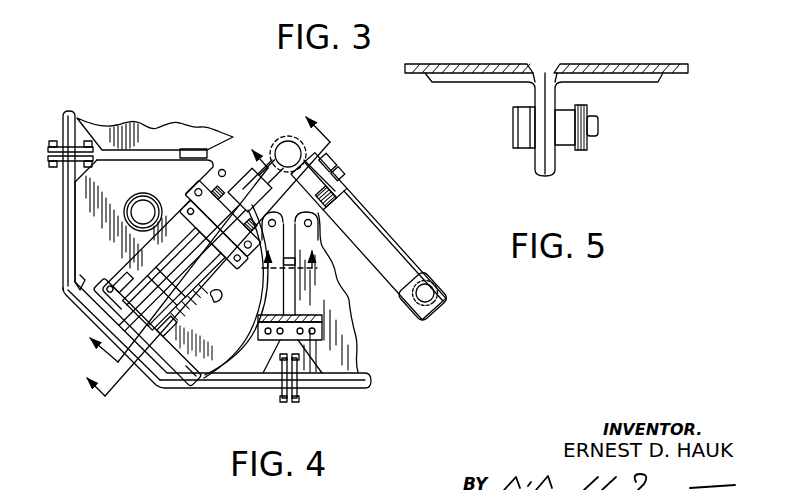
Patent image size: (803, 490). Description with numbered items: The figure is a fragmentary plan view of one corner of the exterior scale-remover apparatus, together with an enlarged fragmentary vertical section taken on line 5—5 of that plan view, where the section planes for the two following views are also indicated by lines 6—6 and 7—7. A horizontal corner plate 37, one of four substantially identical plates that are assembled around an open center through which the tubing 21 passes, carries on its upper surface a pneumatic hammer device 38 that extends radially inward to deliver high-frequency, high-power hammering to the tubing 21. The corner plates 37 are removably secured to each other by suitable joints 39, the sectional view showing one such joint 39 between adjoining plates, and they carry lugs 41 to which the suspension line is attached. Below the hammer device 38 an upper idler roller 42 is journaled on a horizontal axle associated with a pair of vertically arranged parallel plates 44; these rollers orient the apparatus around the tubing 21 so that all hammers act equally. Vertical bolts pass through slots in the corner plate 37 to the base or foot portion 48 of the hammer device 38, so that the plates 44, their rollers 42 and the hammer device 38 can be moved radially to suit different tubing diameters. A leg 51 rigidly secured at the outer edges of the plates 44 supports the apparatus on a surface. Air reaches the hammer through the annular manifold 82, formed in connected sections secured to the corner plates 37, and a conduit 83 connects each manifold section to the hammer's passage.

In FIG. 4, the section line 5— 5 is at (289, 251).
In FIG. 4, the section line 6— 6 is at (200, 246).
In FIG. 4, the section line 7— 7 is at (172, 242).
In FIG. 4, the tubing 21 is at (284, 136).
In FIG. 4, the corner plate 37 is at (165, 133).
In FIG. 5, the corner plate 37 is at (507, 63).
In FIG. 4, the pneumatic hammer device 38 is at (183, 220).
In FIG. 5, the joint 39 is at (607, 132).
In FIG. 4, the lug 41 is at (305, 312).
In FIG. 4, the upper idler roller 42 is at (336, 187).
In FIG. 4, the vertical plate 44 is at (389, 231).
In FIG. 4, the foot portion 48 is at (176, 333).
In FIG. 4, the leg 51 is at (444, 297).
In FIG. 4, the annular manifold 82 is at (63, 290).
In FIG. 4, the conduit 83 is at (190, 374).